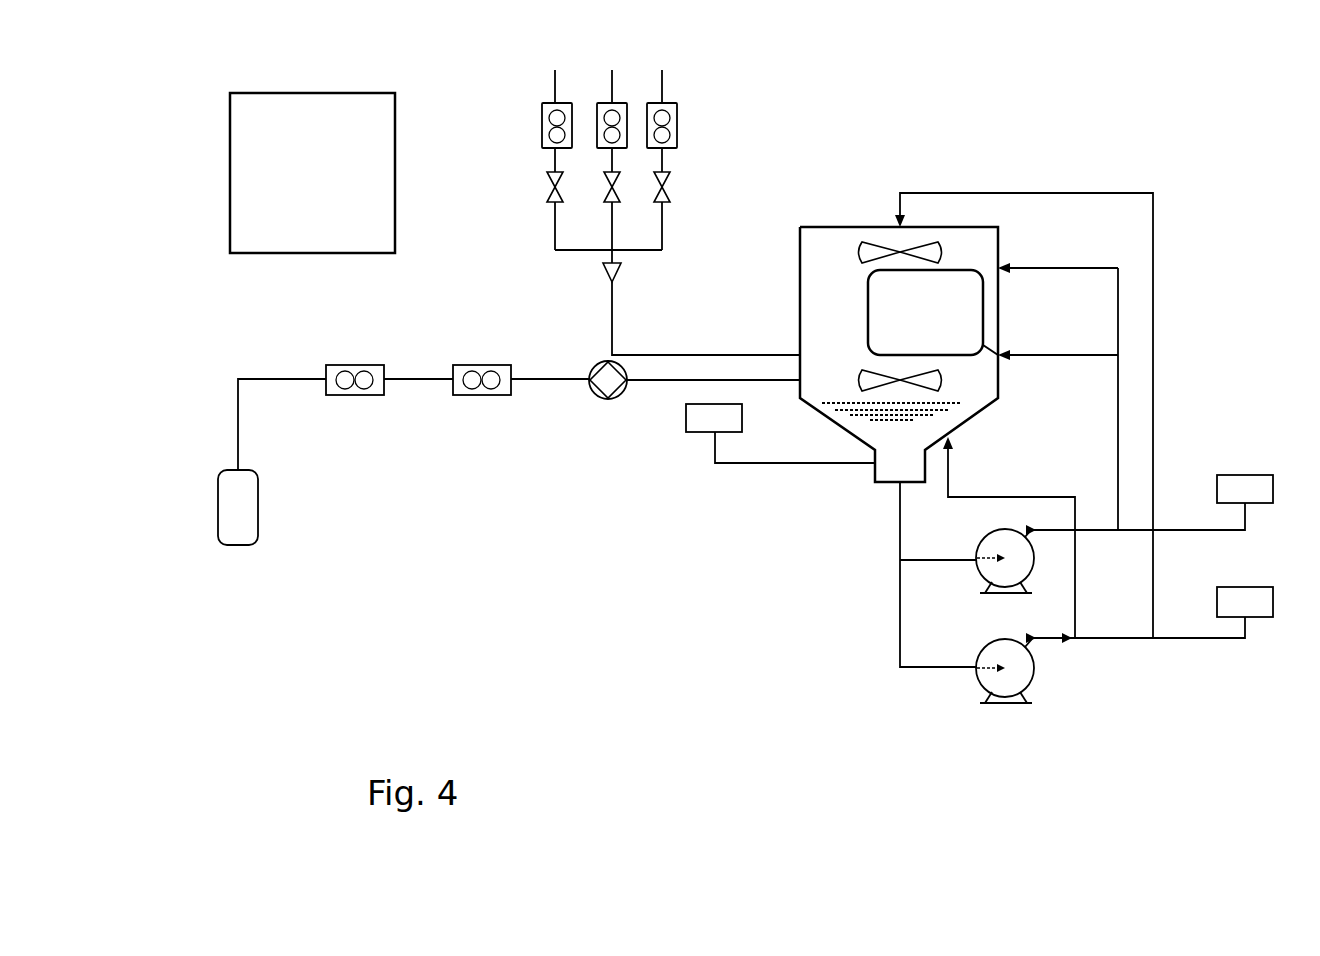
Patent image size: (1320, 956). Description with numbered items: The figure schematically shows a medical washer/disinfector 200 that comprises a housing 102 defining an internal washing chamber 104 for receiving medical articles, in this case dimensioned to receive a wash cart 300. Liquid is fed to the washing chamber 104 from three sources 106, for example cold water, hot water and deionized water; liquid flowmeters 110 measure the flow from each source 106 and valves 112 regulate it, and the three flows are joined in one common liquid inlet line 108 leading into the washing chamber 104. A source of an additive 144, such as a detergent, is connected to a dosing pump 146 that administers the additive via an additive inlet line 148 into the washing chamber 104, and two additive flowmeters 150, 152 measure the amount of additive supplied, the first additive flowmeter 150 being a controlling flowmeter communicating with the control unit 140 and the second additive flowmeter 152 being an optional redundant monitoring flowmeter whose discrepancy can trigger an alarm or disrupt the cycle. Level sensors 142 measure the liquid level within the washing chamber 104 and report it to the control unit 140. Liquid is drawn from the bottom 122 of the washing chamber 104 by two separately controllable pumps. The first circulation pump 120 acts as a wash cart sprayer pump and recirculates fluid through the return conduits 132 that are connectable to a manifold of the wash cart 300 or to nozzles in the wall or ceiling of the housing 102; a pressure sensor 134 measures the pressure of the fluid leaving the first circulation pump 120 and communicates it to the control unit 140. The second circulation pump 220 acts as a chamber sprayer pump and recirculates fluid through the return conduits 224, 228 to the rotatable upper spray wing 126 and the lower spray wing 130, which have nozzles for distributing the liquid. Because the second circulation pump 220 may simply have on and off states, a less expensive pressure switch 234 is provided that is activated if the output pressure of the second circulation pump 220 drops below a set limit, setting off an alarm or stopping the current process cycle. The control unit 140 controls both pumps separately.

The medical washer/disinfector 200 is at (1168, 98).
The control unit 140 is at (338, 192).
The sources of liquid 106 is at (549, 160).
The liquid flowmeters 110 is at (557, 141).
The valves 112 is at (553, 207).
The liquid inlet line 108 is at (653, 302).
The housing 102 is at (841, 354).
The washing chamber 104 is at (812, 351).
The upper spray wing 126 is at (888, 192).
The lower spray wing 130 is at (848, 256).
The wash cart 300 is at (955, 328).
The return conduits 132 is at (1058, 362).
The return conduit 224 is at (1024, 370).
The return conduit 228 is at (1009, 537).
The bottom of the washing chamber 122 is at (867, 568).
The level sensors 142 is at (758, 458).
The source of an additive 144 is at (292, 462).
The additive flowmeter 150 is at (375, 347).
The additive flowmeter 152 is at (499, 345).
The dosing pump 146 is at (573, 419).
The additive inlet line 148 is at (697, 421).
The first circulation pump 120 is at (1087, 571).
The second circulation pump 220 is at (1110, 678).
The pressure sensor 134 is at (1239, 451).
The pressure switch 234 is at (1267, 568).